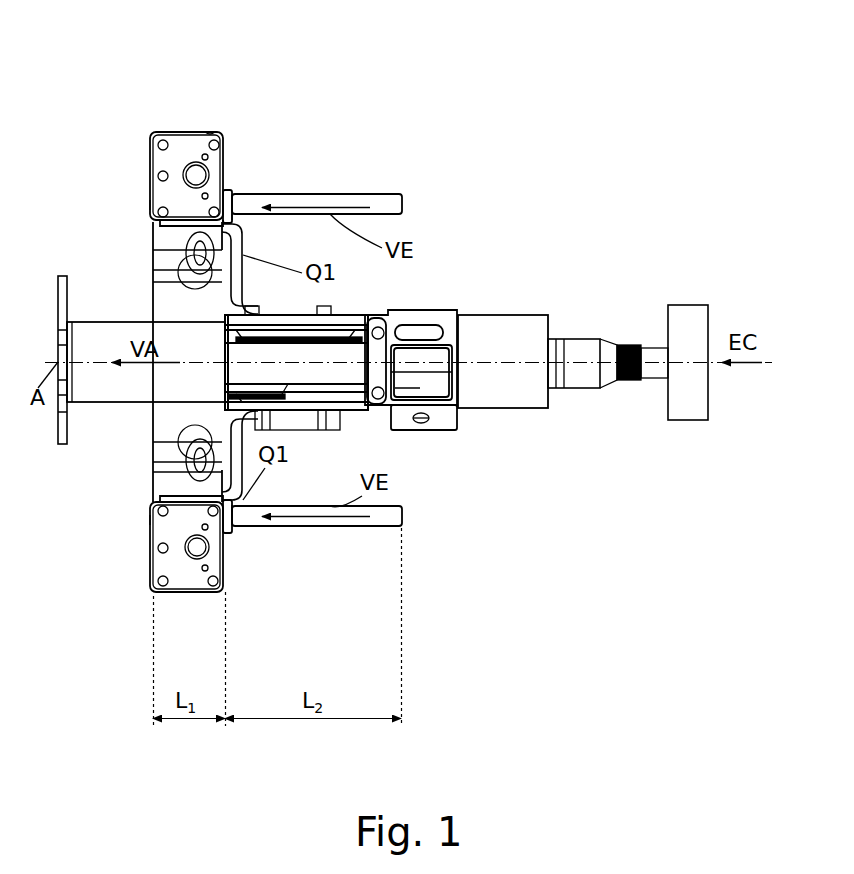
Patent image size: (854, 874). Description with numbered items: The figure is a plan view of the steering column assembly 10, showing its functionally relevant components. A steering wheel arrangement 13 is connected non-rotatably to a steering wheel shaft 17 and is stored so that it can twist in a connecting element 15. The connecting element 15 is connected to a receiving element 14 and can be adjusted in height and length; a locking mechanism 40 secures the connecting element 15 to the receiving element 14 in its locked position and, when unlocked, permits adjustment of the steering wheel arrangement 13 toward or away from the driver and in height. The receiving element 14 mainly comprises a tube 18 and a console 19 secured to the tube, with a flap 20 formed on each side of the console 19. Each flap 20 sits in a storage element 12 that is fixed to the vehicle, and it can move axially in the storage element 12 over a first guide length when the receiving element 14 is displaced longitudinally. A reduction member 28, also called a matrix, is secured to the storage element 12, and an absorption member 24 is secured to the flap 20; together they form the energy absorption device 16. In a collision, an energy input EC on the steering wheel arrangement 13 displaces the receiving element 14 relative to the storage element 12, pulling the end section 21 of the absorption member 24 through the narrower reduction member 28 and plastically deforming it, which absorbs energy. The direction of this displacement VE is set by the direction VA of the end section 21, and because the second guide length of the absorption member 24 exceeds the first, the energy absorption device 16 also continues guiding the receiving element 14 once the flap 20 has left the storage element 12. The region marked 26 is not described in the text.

The steering column assembly 10 is at (358, 104).
The storage element 12 is at (180, 130).
The steering wheel arrangement 13 is at (690, 315).
The receiving element 14 is at (151, 425).
The connecting element 15 is at (528, 385).
The energy absorption device 16 is at (234, 192).
The steering wheel shaft 17 is at (580, 350).
The tube 18 is at (122, 330).
The console 19 is at (158, 495).
The flap 20 is at (152, 135).
The end section 21 is at (330, 194).
The absorption member 24 is at (403, 208).
The joint 26 is at (236, 216).
The reduction member 28 is at (230, 190).
The locking mechanism 40 is at (330, 428).